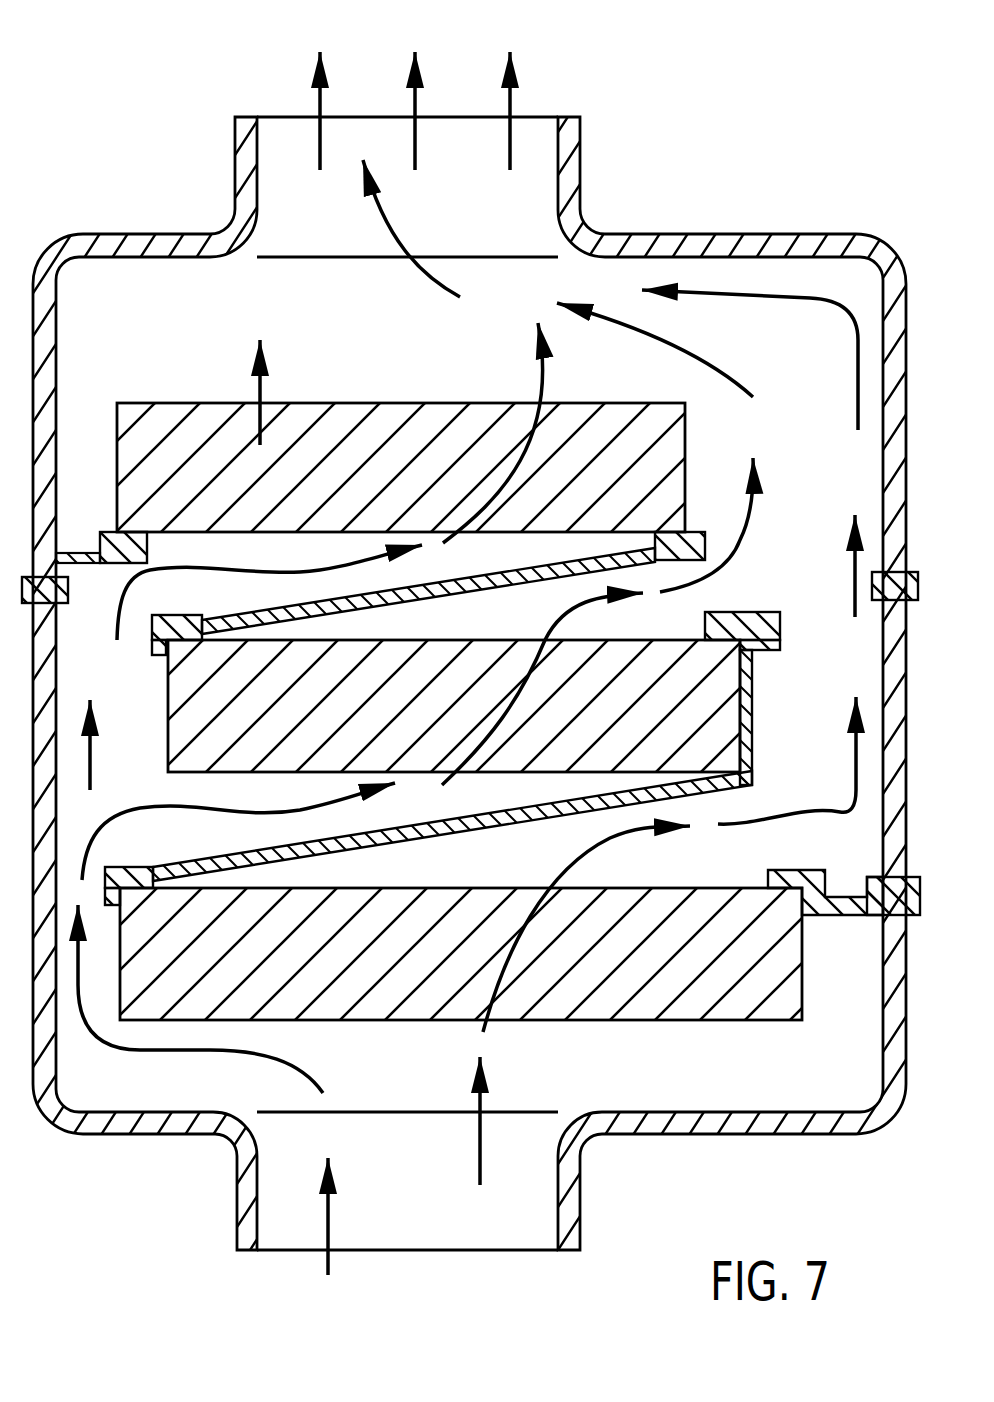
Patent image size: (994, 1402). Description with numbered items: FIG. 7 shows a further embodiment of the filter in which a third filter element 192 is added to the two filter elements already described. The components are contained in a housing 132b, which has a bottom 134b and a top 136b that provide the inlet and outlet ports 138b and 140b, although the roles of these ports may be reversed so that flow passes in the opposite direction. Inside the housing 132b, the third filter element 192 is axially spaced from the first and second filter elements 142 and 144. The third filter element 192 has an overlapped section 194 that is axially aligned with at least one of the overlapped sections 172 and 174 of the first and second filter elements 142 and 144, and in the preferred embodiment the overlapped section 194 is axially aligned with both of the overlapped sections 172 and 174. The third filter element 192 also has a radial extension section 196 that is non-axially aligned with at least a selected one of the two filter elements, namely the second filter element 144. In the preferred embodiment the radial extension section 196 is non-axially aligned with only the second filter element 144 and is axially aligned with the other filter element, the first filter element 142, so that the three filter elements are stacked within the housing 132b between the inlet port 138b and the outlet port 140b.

The housing 132b is at (884, 1135).
The bottom 134b is at (137, 1135).
The top 136b is at (132, 233).
The inlet port 138b is at (490, 1227).
The outlet port 140b is at (278, 128).
The first filter element 142 is at (576, 980).
The second filter element 144 is at (198, 721).
The overlapped section of first filter element 172 is at (423, 975).
The overlapped section of second filter element 174 is at (470, 724).
The third filter element 192 is at (663, 483).
The overlapped section of third filter element 194 is at (390, 420).
The radial extension section of third filter element 196 is at (160, 420).